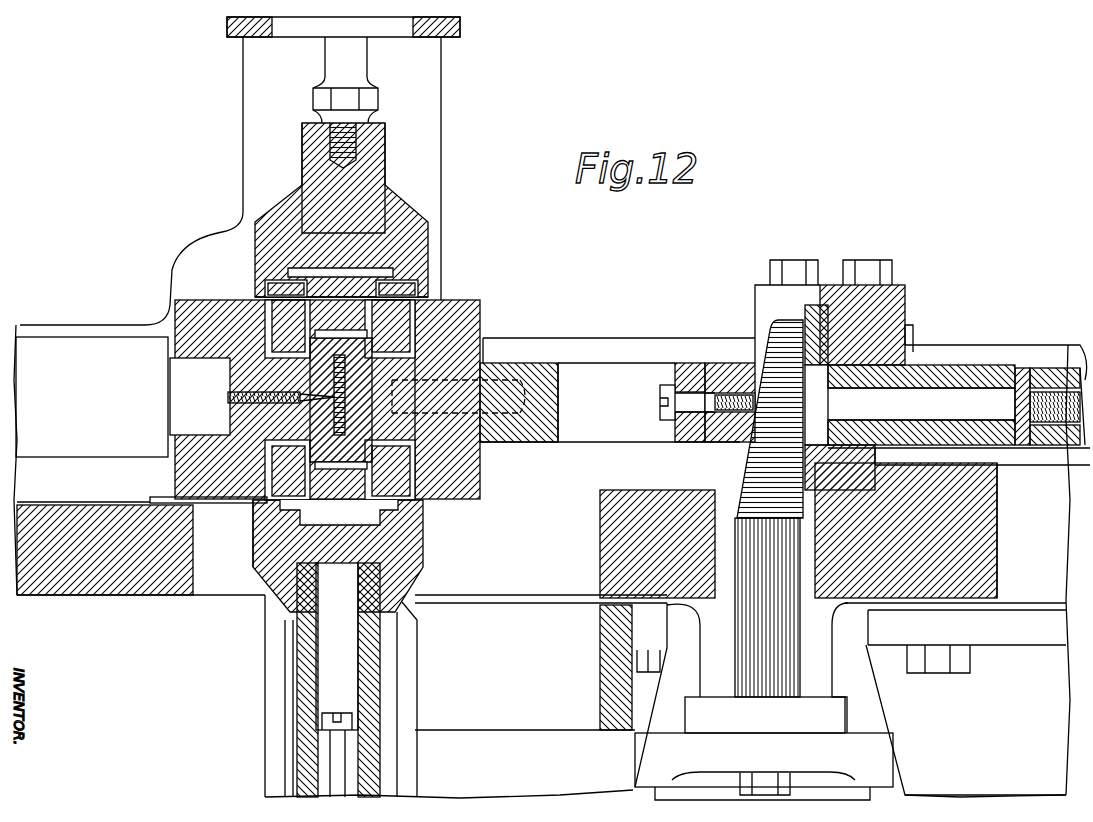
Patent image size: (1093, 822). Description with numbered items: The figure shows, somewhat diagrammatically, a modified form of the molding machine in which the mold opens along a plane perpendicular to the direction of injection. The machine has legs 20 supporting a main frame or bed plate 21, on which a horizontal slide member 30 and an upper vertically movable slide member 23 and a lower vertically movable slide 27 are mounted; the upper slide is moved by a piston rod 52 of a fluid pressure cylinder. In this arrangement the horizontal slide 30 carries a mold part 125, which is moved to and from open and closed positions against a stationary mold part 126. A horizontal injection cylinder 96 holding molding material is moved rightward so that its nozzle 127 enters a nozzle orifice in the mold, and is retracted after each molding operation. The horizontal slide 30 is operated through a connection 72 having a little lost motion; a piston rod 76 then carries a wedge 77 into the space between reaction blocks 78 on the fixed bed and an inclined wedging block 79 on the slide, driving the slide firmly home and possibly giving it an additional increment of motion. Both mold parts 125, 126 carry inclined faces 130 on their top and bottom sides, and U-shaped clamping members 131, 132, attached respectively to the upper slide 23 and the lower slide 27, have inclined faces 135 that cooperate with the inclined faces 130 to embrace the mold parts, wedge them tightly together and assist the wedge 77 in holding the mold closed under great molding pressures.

The legs 20 is at (985, 759).
The main frame or bed plate 21 is at (152, 590).
The upper vertically movable slide member 23 is at (413, 247).
The lower vertically movable slide 27 is at (420, 558).
The horizontal slide member 30 is at (540, 366).
The piston rod 52 is at (360, 62).
The connection 72 is at (1013, 399).
The piston rod 76 is at (748, 625).
The wedge 77 is at (782, 330).
The reaction blocks 78 is at (831, 312).
The inclined wedging block 79 is at (745, 360).
The horizontal cylinder 96 is at (114, 448).
The mold part 125 is at (365, 420).
The mold part 126 is at (233, 328).
The nozzle 127 is at (250, 390).
The inclined faces 130 is at (440, 330).
The clamping member 131 is at (432, 264).
The clamping member 132 is at (385, 478).
The inclined faces 135 is at (320, 327).